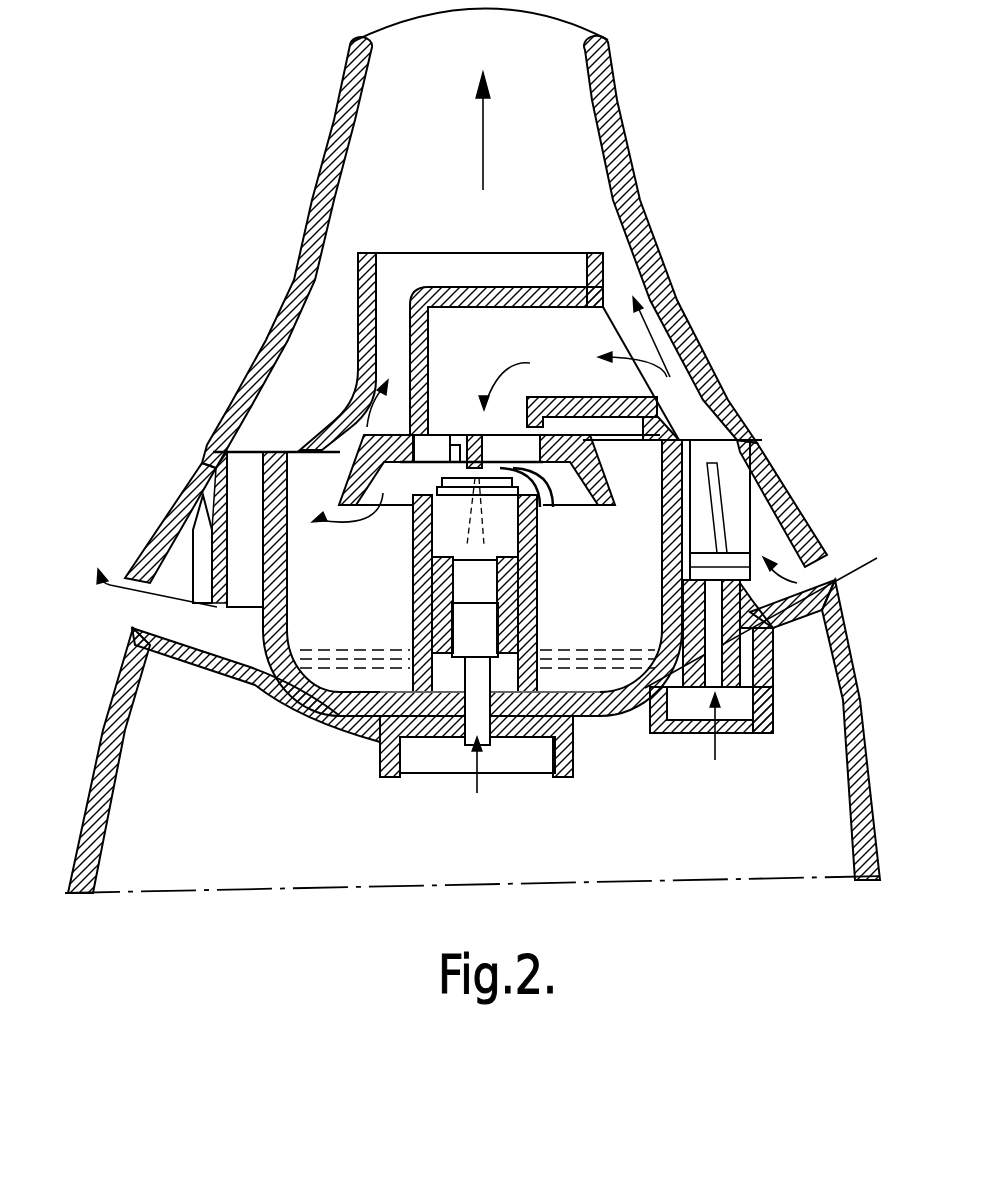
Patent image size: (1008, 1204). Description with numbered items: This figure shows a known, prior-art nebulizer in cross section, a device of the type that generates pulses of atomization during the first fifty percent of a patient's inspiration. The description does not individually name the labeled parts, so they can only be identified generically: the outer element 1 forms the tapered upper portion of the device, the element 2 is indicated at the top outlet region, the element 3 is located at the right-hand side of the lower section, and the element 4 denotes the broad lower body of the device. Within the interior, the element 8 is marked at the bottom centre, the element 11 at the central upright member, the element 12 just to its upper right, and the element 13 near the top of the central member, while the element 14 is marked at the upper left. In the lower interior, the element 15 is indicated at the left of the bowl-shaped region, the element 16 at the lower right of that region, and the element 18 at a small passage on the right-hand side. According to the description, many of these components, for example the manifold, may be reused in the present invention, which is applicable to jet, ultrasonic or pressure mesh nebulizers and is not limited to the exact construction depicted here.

The cap / housing wall 1 is at (627, 177).
The spray outlet direction arrow 2 is at (485, 153).
The air inlet valve 3 is at (783, 488).
The container body 4 is at (856, 706).
The liquid intake opening 8 is at (452, 735).
The pump cylinder 11 is at (537, 617).
The deflector channel 12 is at (548, 508).
The nozzle insert 13 is at (455, 447).
The curved air duct wall 14 is at (353, 455).
The liquid reservoir cup 15 is at (330, 690).
The reservoir bottom 16 is at (540, 630).
The air channel 18 is at (711, 687).